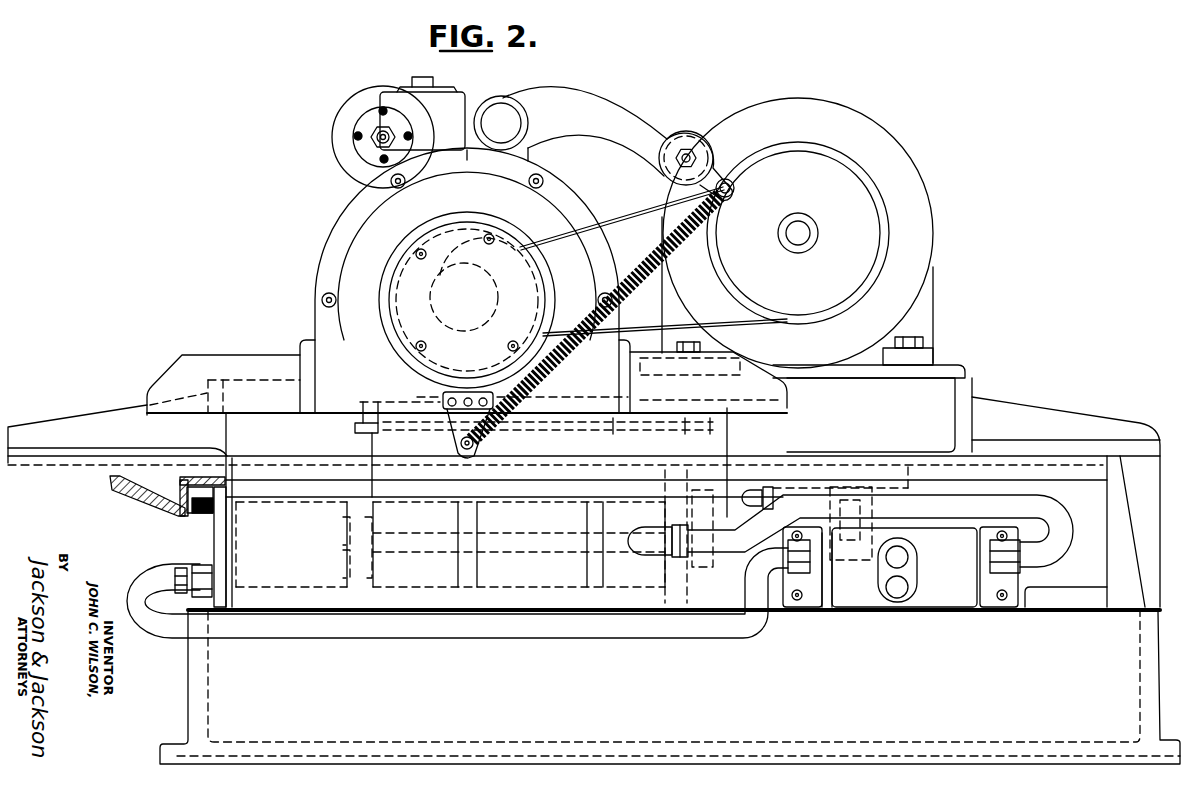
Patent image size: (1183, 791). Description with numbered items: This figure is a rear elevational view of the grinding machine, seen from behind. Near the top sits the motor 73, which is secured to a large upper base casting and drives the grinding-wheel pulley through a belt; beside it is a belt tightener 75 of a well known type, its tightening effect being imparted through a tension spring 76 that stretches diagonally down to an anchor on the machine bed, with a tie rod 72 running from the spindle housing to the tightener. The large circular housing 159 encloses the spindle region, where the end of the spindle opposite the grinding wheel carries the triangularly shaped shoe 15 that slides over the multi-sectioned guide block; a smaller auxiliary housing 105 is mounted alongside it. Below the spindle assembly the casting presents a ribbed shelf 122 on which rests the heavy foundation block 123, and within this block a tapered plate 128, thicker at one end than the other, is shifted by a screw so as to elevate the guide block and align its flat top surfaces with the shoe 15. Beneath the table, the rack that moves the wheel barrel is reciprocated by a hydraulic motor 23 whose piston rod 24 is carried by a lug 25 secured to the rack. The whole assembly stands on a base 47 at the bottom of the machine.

The shoe 15 is at (395, 275).
The hydraulic motor 23 is at (304, 574).
The piston rod 24 is at (748, 551).
The lug 25 is at (852, 515).
The base 47 is at (1096, 675).
The tie rod 72 is at (630, 205).
The motor 73 is at (906, 163).
The belt tightener 75 is at (610, 120).
The tension spring 76 is at (643, 256).
The auxiliary motor housing 105 is at (345, 106).
The ribbed shelf 122 is at (474, 536).
The foundation block 123 is at (716, 445).
The tapered plate 128 is at (355, 430).
The motor housing ring 159 is at (357, 243).